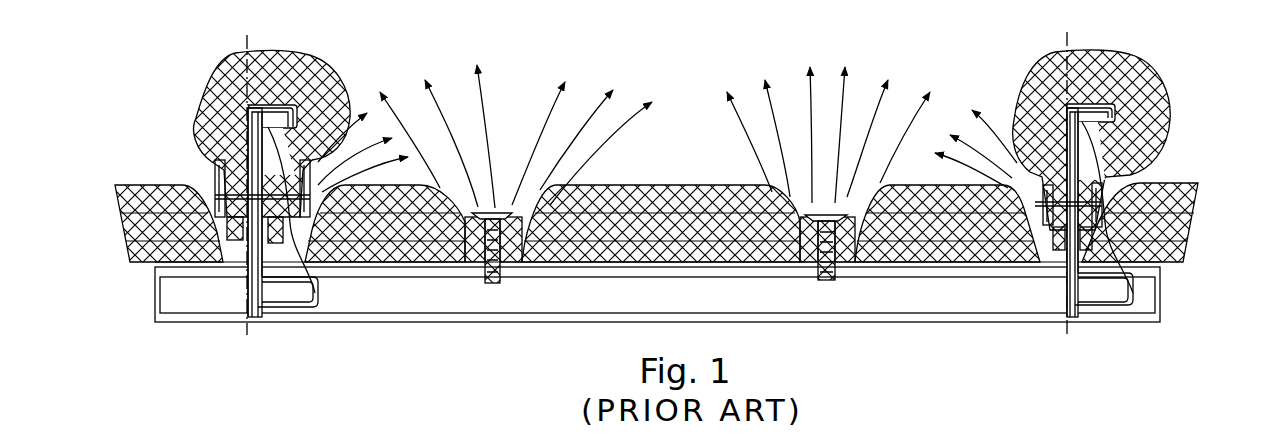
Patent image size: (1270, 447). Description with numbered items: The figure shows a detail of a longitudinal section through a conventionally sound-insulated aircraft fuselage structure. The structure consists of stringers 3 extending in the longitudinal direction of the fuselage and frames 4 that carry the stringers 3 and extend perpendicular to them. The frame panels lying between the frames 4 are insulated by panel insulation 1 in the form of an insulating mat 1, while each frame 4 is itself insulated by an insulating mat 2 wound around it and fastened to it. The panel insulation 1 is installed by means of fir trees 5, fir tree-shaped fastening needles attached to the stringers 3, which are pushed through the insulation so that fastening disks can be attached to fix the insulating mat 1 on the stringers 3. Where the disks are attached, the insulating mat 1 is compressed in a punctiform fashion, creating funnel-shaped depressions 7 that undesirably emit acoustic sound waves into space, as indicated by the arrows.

The panel insulation 1 is at (655, 187).
The insulating mat 2 is at (322, 58).
The stringer 3 is at (655, 305).
The frame 4 is at (200, 94).
The fir tree 5 is at (497, 212).
The funnel-shaped depression 7 is at (788, 204).